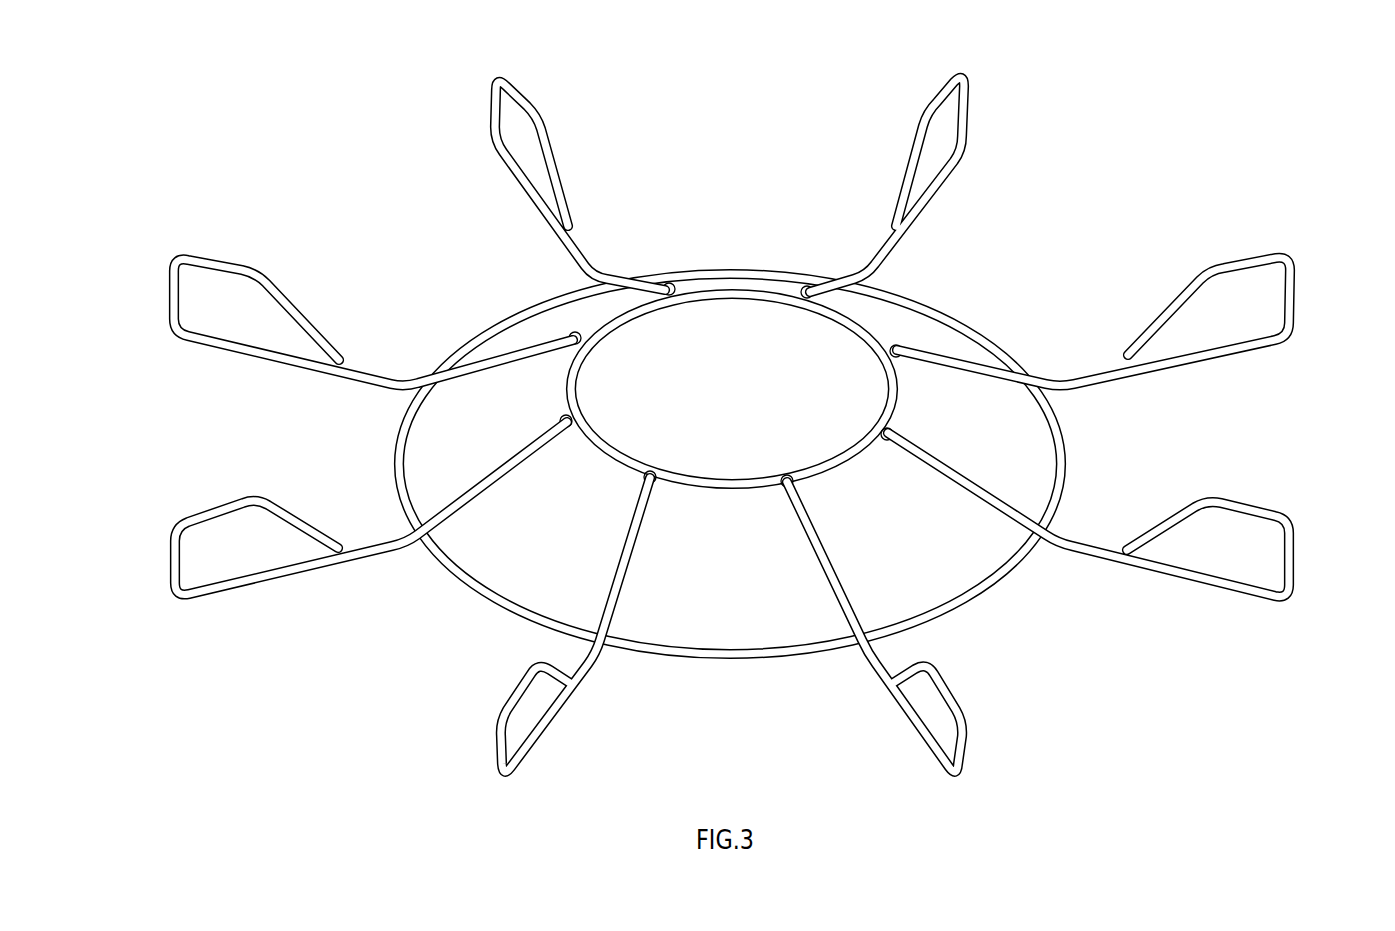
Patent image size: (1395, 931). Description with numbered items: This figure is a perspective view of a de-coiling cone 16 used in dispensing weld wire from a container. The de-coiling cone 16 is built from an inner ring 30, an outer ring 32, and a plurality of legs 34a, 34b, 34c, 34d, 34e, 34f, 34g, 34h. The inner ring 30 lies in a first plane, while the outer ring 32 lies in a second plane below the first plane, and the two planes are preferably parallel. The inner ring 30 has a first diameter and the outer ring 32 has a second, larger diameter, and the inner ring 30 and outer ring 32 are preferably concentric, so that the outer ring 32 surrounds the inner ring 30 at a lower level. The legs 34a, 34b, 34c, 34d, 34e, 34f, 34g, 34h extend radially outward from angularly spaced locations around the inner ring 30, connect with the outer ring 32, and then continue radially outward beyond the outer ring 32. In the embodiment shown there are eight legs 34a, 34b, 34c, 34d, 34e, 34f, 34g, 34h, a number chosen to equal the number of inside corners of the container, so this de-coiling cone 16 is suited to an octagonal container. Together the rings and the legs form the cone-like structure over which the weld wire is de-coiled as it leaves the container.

The de-coiling cone 16 is at (730, 426).
The inner ring 30 is at (712, 291).
The outer ring 32 is at (772, 273).
The leg 34a is at (151, 577).
The leg 34b is at (478, 762).
The leg 34c is at (986, 746).
The leg 34d is at (1313, 570).
The leg 34e is at (1313, 288).
The leg 34f is at (980, 75).
The leg 34g is at (476, 94).
The leg 34h is at (144, 281).